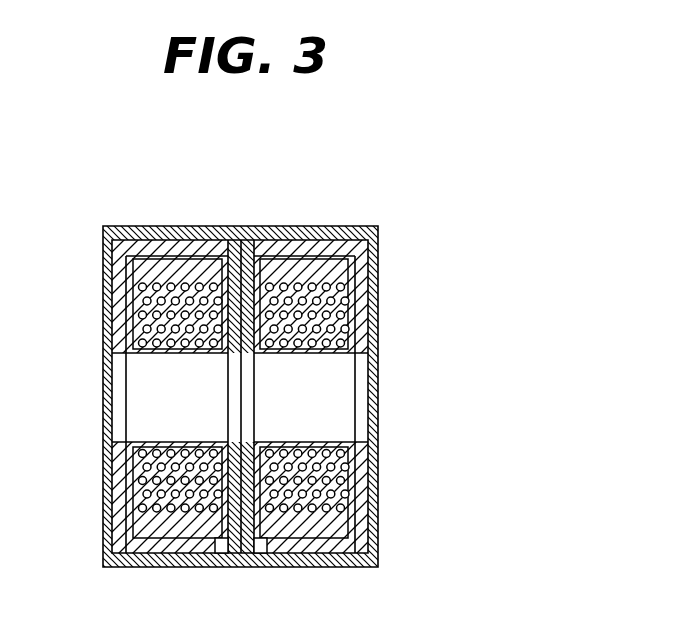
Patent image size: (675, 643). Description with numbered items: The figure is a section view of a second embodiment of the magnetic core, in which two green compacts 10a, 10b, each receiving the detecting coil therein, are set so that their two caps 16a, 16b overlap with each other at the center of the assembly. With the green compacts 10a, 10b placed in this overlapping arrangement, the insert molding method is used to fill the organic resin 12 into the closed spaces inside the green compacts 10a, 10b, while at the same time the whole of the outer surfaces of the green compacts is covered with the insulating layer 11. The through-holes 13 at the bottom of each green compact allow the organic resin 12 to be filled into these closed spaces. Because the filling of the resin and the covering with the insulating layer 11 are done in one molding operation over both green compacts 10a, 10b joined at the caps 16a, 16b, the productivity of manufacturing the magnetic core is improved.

The green compact 10a is at (311, 247).
The green compact 10b is at (154, 244).
The insulating layer 11 is at (379, 229).
The organic resin 12 is at (134, 273).
The through-hole 13 is at (224, 553).
The cap 16a is at (252, 241).
The cap 16b is at (230, 241).